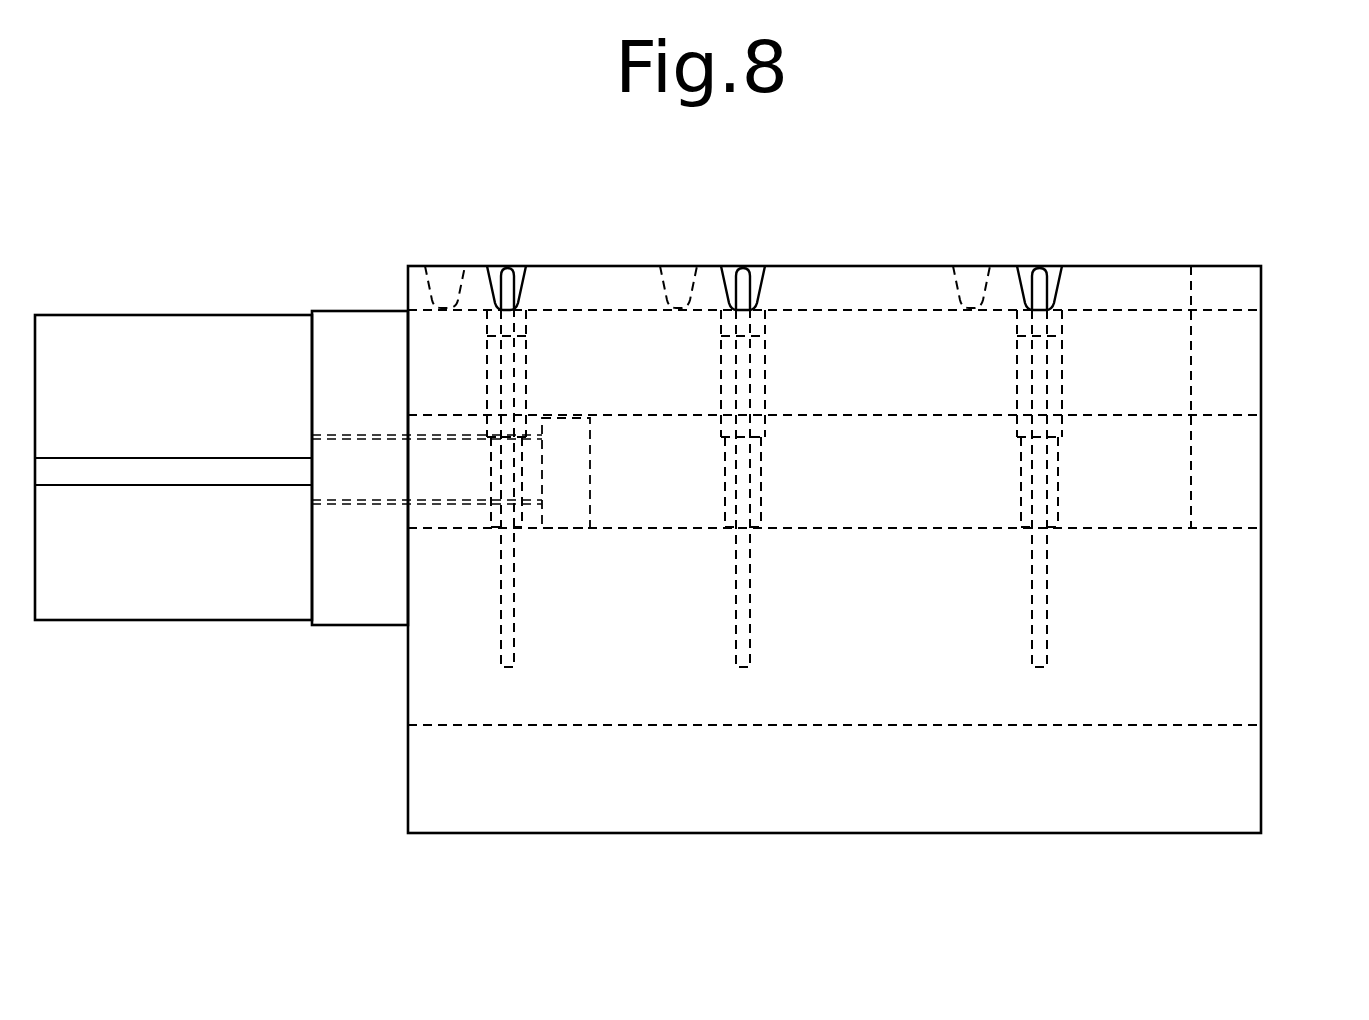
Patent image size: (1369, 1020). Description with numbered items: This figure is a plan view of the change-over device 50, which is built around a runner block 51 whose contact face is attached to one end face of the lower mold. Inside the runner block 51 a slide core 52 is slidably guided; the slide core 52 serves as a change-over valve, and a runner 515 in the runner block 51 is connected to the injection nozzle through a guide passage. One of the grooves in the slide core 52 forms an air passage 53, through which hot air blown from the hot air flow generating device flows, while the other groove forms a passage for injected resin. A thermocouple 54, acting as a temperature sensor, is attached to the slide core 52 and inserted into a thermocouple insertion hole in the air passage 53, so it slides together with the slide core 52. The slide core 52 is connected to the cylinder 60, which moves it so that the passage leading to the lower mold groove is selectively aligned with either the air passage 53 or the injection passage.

The change-over device 50 is at (400, 250).
The runner block 51 is at (1232, 789).
The slide core 52 is at (1165, 374).
The air passage 53 is at (1050, 266).
The thermocouple 54 is at (975, 268).
The runner 515 is at (838, 275).
The cylinder 60 is at (152, 340).